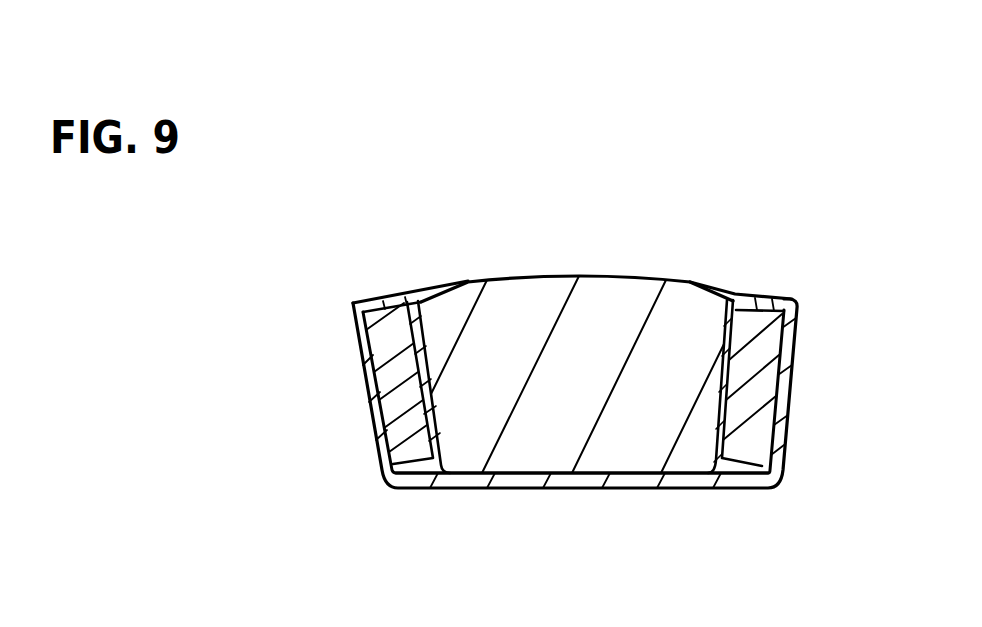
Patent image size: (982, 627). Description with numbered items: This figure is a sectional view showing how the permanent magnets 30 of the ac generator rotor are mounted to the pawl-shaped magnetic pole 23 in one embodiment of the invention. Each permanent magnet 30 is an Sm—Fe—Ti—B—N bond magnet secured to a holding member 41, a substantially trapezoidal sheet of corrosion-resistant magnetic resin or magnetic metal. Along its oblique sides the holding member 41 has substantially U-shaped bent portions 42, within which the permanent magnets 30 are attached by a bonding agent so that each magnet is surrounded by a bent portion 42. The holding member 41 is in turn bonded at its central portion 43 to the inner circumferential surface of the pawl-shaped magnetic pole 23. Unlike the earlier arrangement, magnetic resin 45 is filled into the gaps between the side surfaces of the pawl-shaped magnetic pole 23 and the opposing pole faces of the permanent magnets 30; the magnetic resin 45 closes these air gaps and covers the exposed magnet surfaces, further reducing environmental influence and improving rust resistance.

The pawl-shaped magnetic pole 23 is at (610, 310).
The permanent magnet 30 is at (393, 387).
The holding member 41 is at (520, 478).
The bent portion 42 is at (360, 343).
The central portion 43 is at (633, 478).
The magnetic resin 45 is at (417, 298).